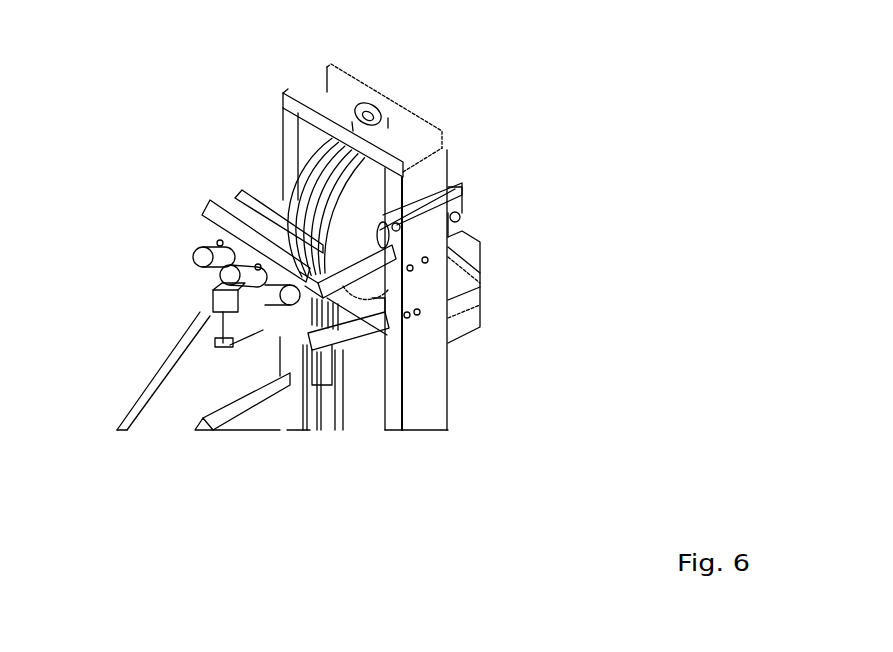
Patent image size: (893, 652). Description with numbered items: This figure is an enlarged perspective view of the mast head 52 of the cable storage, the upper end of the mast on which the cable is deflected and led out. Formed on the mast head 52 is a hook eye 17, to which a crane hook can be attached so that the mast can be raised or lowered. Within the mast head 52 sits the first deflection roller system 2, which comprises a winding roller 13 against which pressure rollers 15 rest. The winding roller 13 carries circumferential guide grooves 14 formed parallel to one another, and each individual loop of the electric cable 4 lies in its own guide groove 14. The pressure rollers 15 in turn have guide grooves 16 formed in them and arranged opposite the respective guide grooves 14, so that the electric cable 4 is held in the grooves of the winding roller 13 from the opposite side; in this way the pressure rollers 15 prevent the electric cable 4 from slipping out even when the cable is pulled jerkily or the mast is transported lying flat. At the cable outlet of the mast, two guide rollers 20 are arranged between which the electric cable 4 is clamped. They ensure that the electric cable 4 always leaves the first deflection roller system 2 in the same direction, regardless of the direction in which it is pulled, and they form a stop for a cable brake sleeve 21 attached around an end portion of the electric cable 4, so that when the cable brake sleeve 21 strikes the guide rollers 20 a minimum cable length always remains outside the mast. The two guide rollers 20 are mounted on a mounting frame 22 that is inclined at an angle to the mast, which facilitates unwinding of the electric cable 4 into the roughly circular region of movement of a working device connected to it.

The first deflection roller system 2 is at (247, 182).
The electric cable 4 is at (142, 393).
The winding roller 13 is at (378, 233).
The guide grooves 14 is at (310, 217).
The pressure rollers 15 is at (300, 350).
The guide grooves 16 is at (289, 293).
The hook eye 17 is at (378, 111).
The guide rollers 20 is at (200, 280).
The cable brake sleeve 21 is at (212, 302).
The mounting frame 22 is at (355, 323).
The mast head 52 is at (452, 140).